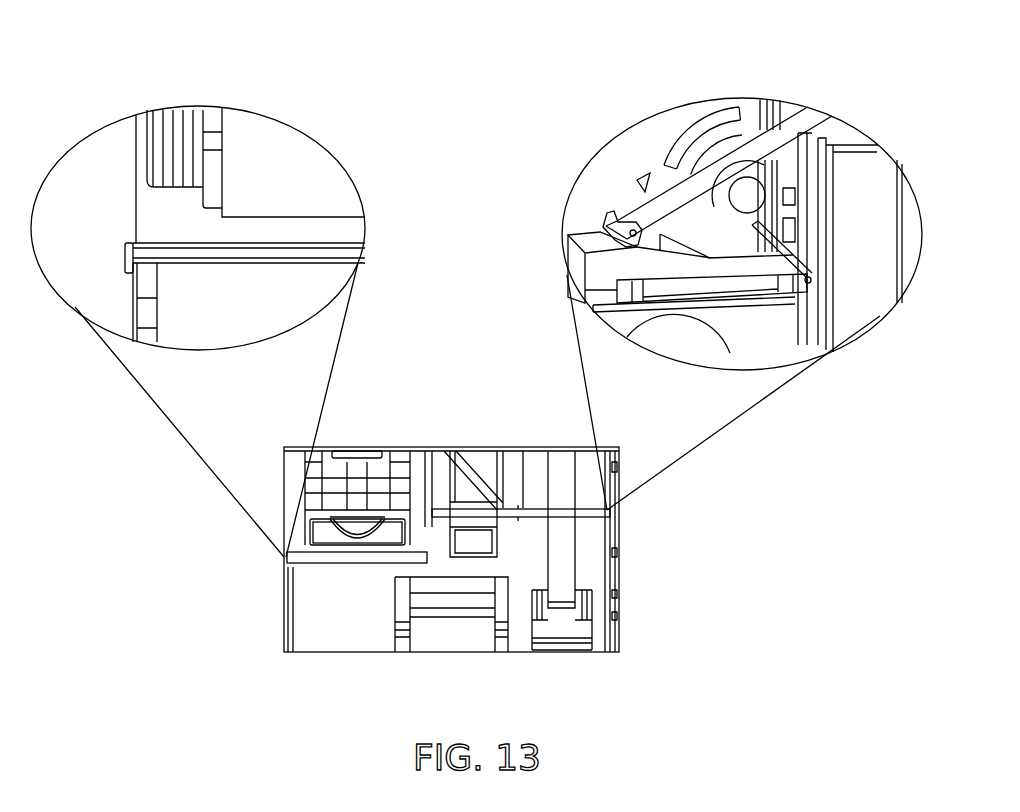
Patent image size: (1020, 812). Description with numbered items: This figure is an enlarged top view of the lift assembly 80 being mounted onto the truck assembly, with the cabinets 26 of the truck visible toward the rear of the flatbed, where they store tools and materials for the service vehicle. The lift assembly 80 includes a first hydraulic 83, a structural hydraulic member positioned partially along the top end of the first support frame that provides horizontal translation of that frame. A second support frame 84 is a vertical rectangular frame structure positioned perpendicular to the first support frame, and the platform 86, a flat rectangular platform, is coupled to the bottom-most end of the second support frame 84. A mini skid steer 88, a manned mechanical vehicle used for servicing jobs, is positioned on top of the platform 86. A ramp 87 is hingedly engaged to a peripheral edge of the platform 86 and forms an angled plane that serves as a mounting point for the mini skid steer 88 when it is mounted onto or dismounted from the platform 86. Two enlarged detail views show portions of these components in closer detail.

The cabinets 26 is at (873, 192).
The lift assembly 80 is at (442, 445).
The first hydraulic 83 is at (477, 510).
The second support frame 84 is at (768, 120).
The platform 86 is at (150, 210).
The ramp 87 is at (246, 253).
The mini skid steer 88 is at (277, 152).